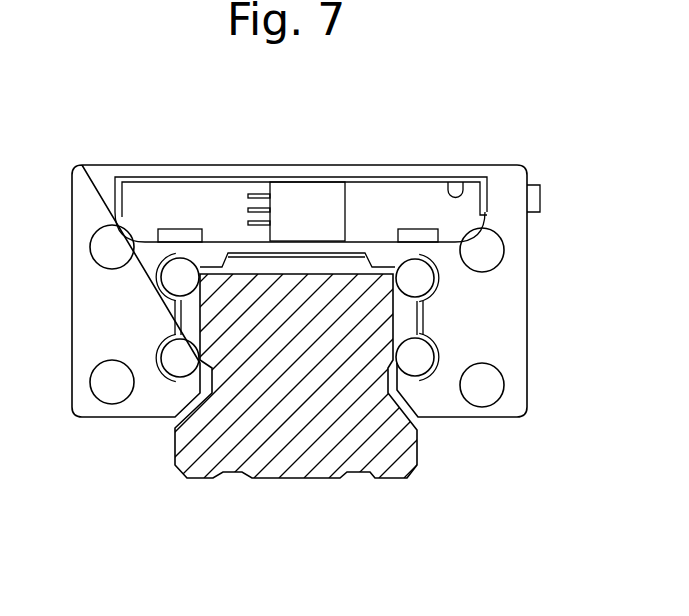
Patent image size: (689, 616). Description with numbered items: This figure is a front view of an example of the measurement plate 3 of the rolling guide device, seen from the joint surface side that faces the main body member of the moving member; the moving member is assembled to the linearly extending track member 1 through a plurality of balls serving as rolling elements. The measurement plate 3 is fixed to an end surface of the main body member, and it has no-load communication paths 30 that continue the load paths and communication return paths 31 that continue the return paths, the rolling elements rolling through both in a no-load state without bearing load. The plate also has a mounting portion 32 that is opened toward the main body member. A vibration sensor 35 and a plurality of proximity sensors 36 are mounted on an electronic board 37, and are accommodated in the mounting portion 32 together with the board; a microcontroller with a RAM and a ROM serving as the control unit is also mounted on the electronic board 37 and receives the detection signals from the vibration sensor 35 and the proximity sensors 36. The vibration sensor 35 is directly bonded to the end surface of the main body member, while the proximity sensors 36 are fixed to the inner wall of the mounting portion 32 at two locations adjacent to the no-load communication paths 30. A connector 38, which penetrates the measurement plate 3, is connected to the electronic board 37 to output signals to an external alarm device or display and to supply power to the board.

The track member 1 is at (290, 484).
The measurement plate 3 is at (108, 168).
The no-load communication path 30 is at (160, 296).
The communication return path 31 is at (95, 262).
The mounting portion 32 is at (451, 192).
The vibration sensor 35 is at (323, 190).
The proximity sensor 36 is at (178, 228).
The electronic board 37 is at (213, 195).
The connector 38 is at (541, 186).